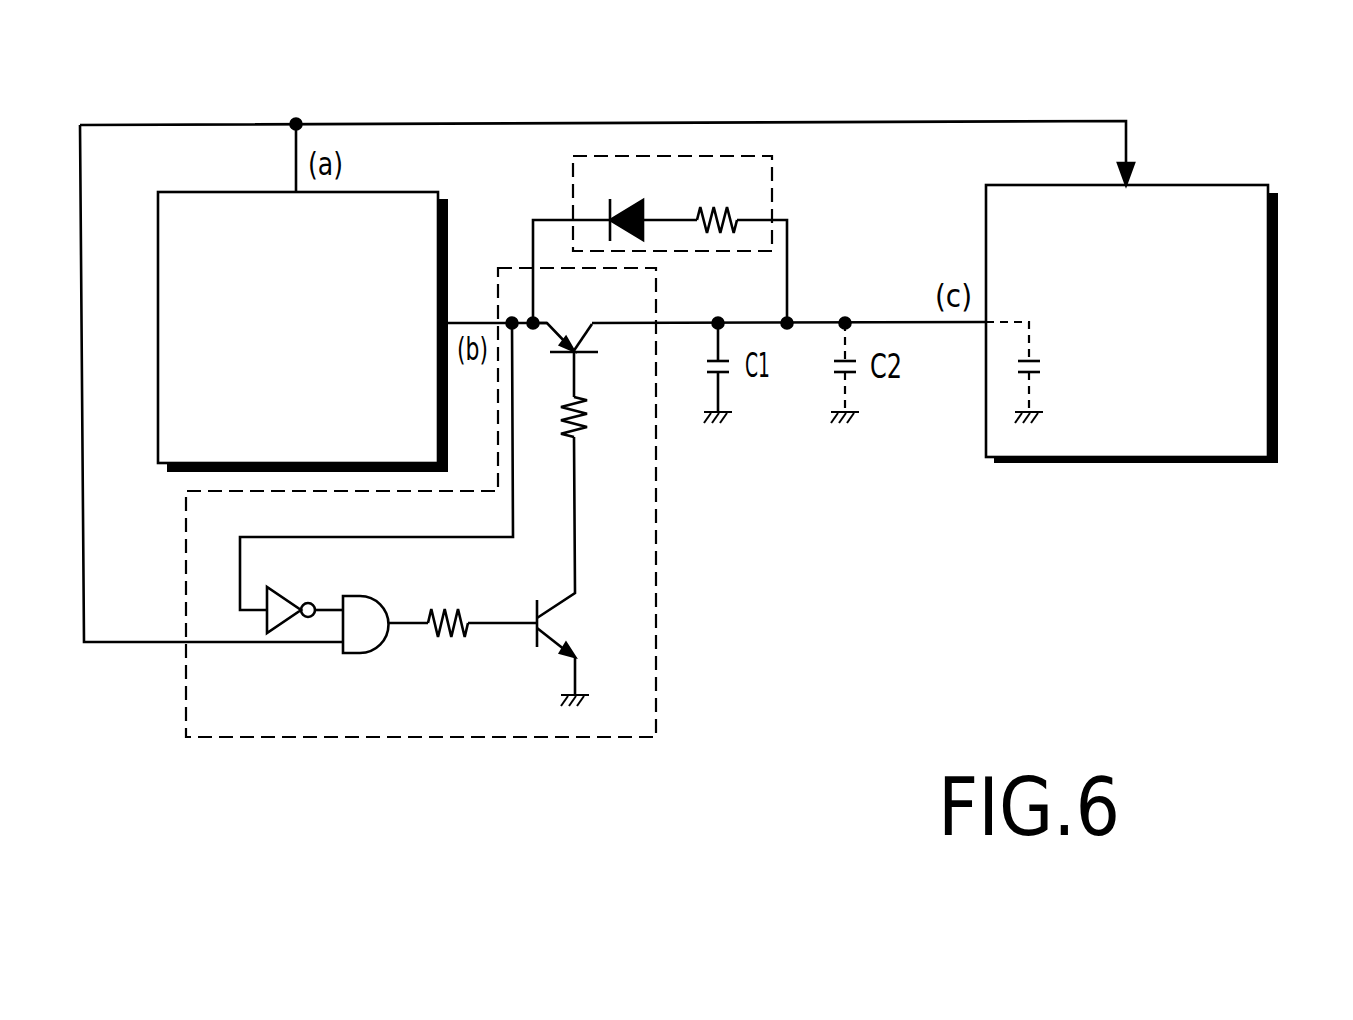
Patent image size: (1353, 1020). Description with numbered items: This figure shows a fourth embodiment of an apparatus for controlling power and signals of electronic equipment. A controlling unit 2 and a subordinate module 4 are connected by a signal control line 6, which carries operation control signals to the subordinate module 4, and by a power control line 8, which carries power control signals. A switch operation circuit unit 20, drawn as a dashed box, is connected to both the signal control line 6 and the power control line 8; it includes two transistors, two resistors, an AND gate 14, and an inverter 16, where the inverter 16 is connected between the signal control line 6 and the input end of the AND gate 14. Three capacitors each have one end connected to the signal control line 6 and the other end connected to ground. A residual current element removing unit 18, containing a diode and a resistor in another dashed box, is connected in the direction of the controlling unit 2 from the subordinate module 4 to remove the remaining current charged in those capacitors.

The controlling unit 2 is at (158, 330).
The subordinate module 4 is at (1278, 318).
The signal control line 6 is at (463, 323).
The power control line 8 is at (407, 121).
The AND gate 14 is at (372, 648).
The inverter 16 is at (287, 593).
The residual current element removing unit 18 is at (775, 195).
The switch operation circuit unit 20 is at (656, 675).